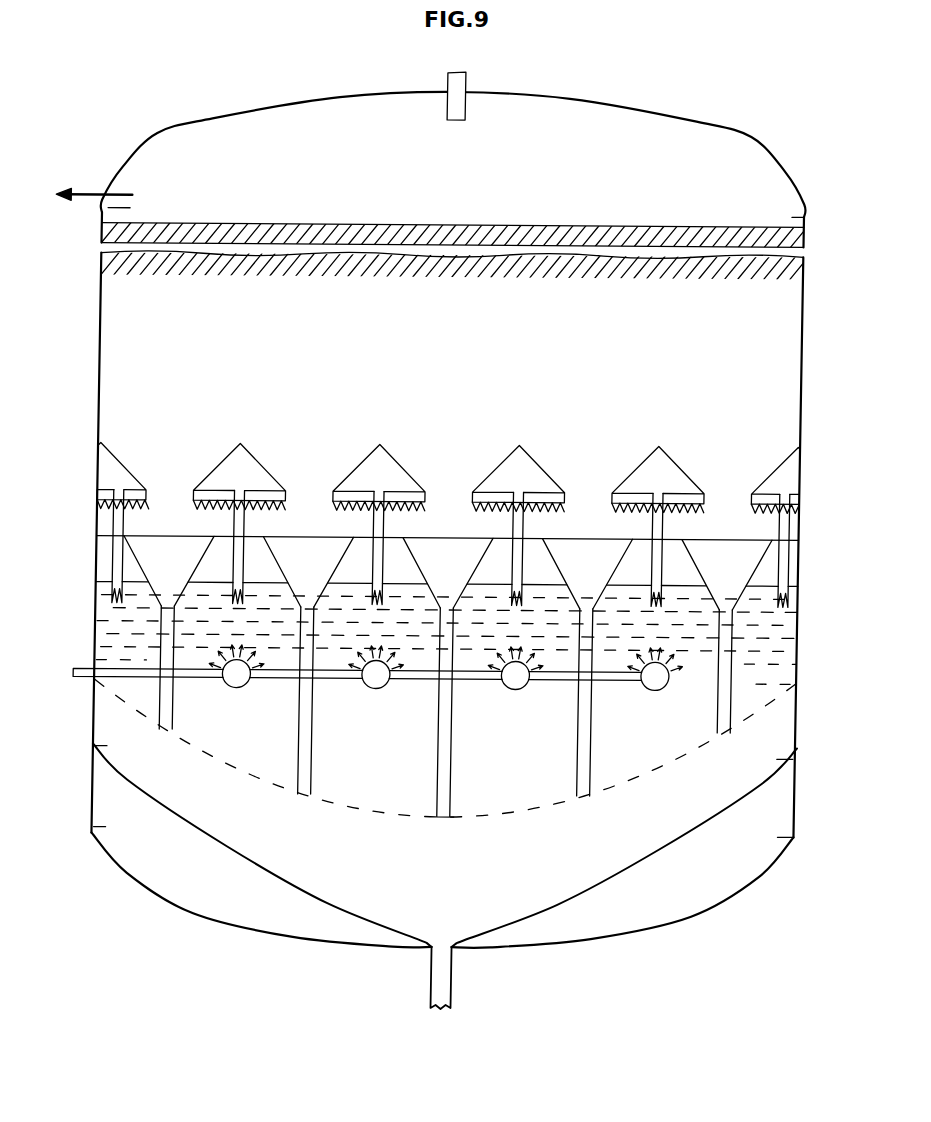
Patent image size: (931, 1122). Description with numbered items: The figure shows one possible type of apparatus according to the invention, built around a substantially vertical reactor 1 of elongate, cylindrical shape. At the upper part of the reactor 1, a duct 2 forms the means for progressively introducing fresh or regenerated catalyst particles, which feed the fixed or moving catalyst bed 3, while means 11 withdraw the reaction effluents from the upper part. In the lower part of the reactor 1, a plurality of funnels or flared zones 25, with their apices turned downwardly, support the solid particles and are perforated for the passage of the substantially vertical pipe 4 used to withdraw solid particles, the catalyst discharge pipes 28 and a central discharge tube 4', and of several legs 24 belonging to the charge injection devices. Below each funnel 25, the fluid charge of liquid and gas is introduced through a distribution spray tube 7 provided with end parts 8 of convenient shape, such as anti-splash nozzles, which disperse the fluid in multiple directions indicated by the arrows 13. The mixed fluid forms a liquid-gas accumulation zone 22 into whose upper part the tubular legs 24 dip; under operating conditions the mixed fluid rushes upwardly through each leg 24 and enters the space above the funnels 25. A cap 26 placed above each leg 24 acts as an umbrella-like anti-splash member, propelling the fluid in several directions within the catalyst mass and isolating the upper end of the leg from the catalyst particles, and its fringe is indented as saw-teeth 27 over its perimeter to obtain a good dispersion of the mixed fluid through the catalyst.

The reactor 1 is at (207, 120).
The duct 2 is at (444, 72).
The catalyst bed 3 is at (109, 267).
The vertical pipe 4 is at (457, 981).
The central discharge tube 4' is at (468, 712).
The distribution spray tube 7 is at (86, 680).
The end part 8 is at (239, 690).
The means for withdrawing reaction effluents 11 is at (82, 196).
The arrows 13 is at (681, 665).
The liquid-gas accumulation zone 22 is at (776, 645).
The leg 24 is at (786, 534).
The funnel 25 is at (760, 571).
The cap 26 is at (792, 466).
The saw-teeth 27 is at (794, 510).
The catalyst discharge pipe 28 is at (596, 729).